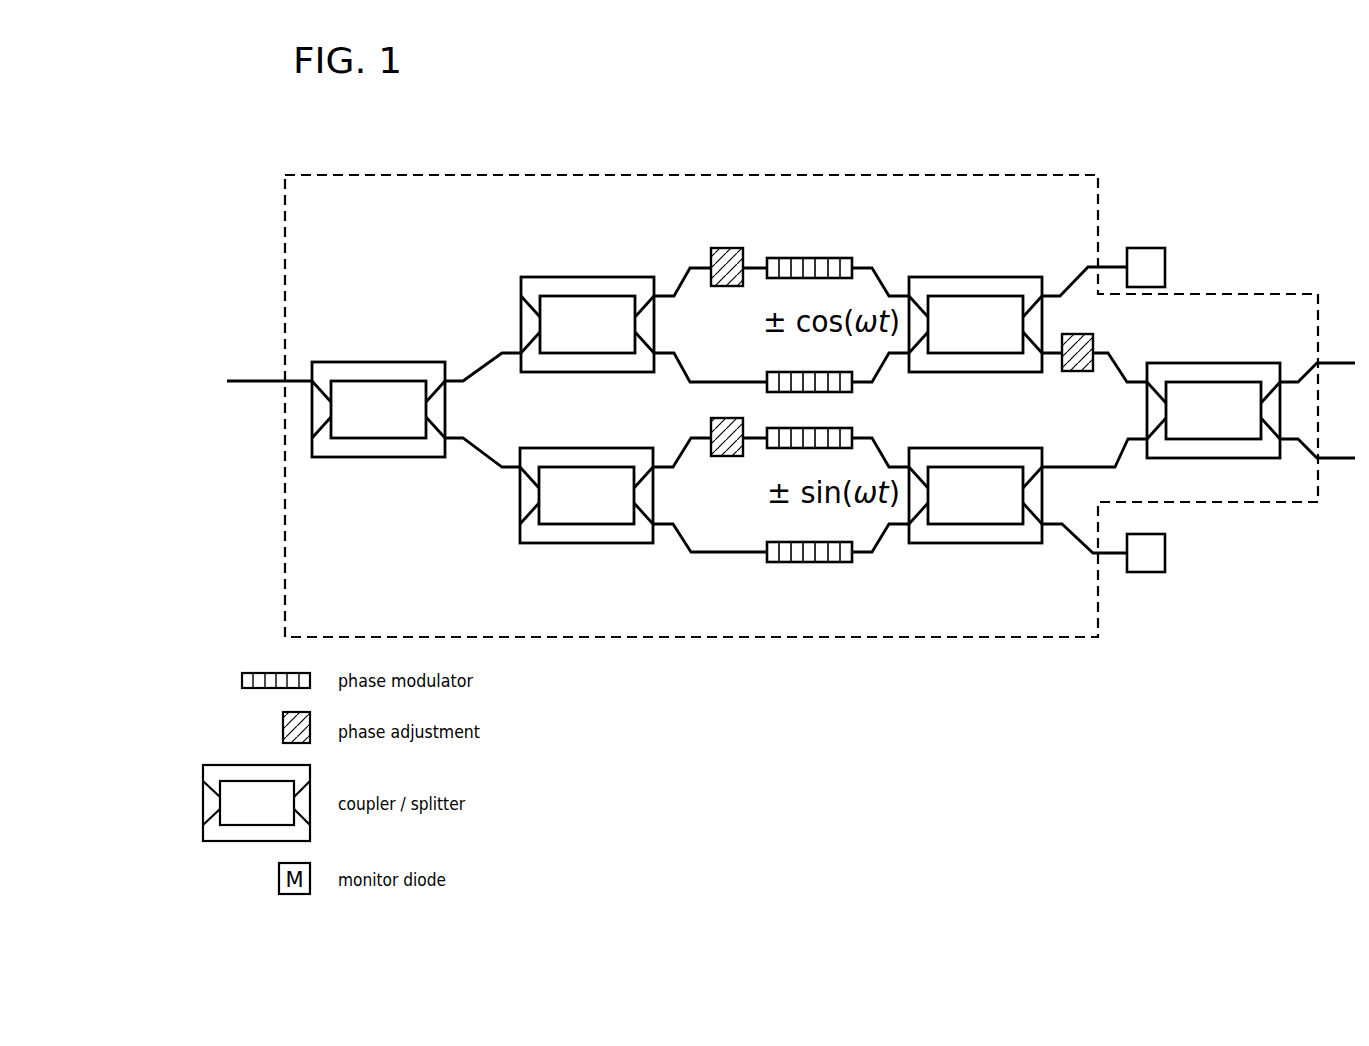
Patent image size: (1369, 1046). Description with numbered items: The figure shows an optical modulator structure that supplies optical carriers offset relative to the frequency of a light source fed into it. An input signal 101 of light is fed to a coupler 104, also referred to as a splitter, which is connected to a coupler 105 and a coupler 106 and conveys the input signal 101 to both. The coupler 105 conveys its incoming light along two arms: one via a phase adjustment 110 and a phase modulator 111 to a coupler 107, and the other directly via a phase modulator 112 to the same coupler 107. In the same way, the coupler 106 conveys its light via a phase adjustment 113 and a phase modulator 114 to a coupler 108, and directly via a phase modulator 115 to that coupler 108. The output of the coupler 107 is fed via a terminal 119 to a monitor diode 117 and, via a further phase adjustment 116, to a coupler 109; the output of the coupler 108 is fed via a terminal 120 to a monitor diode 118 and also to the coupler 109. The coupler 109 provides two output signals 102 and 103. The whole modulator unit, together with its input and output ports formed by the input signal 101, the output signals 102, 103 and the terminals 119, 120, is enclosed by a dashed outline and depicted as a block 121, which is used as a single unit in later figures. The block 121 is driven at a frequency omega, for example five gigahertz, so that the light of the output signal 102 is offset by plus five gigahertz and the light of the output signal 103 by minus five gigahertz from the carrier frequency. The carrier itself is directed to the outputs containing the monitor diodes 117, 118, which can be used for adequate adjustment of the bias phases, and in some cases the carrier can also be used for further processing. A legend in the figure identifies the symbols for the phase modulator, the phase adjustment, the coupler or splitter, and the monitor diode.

The input signal 101 is at (269, 365).
The output signal 102 is at (1318, 361).
The output signal 103 is at (1318, 456).
The coupler 104 is at (395, 362).
The coupler 105 is at (558, 277).
The coupler 106 is at (560, 543).
The coupler 107 is at (952, 277).
The coupler 108 is at (951, 543).
The coupler 109 is at (1227, 363).
The phase adjustment 110 is at (725, 248).
The phase modulator 111 is at (813, 258).
The phase modulator 112 is at (767, 372).
The phase adjustment 113 is at (711, 425).
The phase modulator 114 is at (852, 431).
The phase modulator 115 is at (810, 562).
The phase adjustment 116 is at (1067, 371).
The monitor diode 117 is at (1140, 248).
The monitor diode 118 is at (1145, 572).
The terminal 119 is at (1102, 267).
The terminal 120 is at (1092, 555).
The block 121 is at (707, 637).